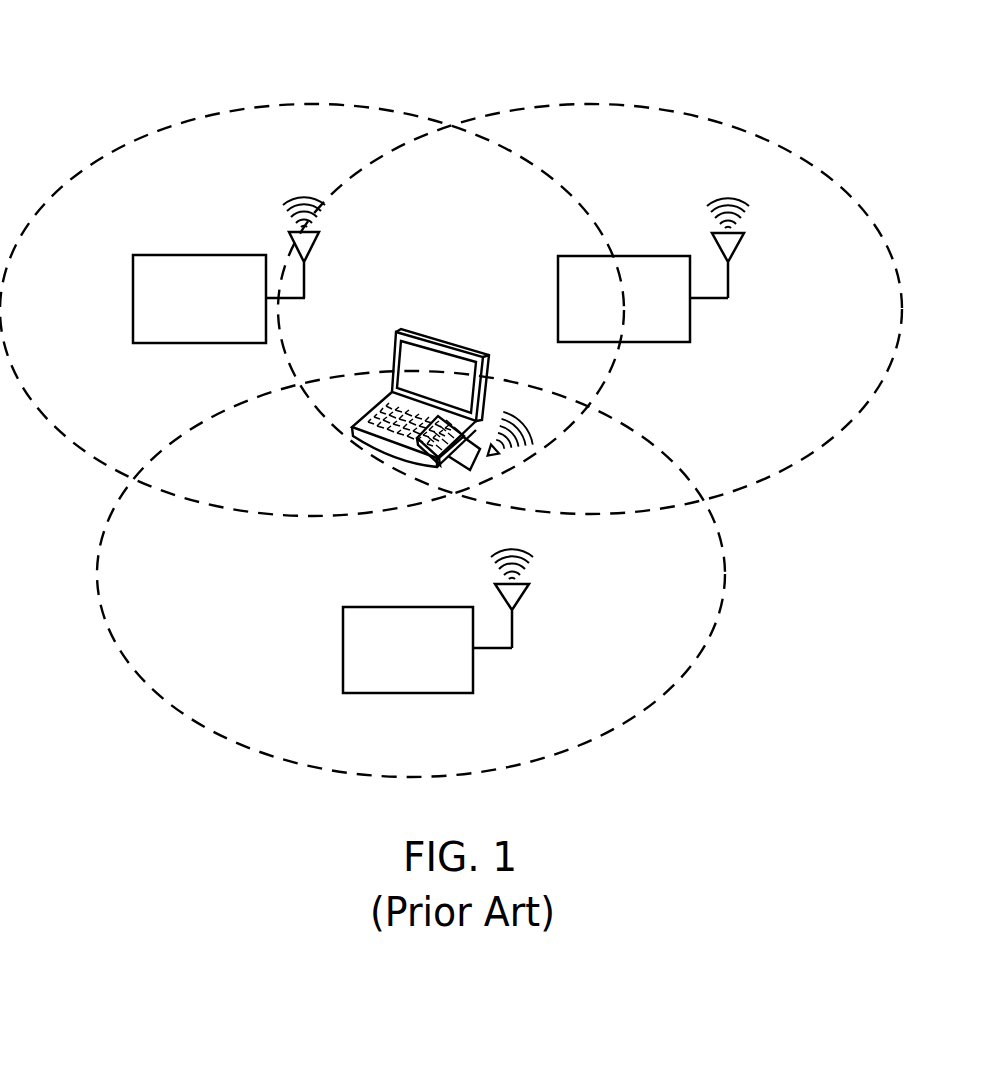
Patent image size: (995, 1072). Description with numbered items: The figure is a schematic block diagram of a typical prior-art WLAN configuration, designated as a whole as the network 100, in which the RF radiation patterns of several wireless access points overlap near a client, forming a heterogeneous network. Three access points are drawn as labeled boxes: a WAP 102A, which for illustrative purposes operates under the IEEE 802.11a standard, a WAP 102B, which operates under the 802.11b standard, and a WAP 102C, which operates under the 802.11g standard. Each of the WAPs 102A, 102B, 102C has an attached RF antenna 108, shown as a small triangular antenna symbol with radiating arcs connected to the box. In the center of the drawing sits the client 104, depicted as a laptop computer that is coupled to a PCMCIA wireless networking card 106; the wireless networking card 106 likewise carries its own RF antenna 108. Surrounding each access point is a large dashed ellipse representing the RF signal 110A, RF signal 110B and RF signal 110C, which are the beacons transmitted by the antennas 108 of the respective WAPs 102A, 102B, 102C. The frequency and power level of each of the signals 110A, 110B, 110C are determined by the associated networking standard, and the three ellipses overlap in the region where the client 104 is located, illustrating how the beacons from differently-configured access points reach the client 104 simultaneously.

The wireless network system 100 is at (113, 57).
The WAP 102A is at (219, 299).
The WAP 102B is at (643, 299).
The WAP 102C is at (427, 650).
The client 104 is at (438, 336).
The PCMCIA wireless networking card 106 is at (445, 470).
The RF antenna 108 is at (320, 232).
The RF signal 110A is at (251, 107).
The RF signal 110B is at (696, 116).
The RF signal 110C is at (586, 747).